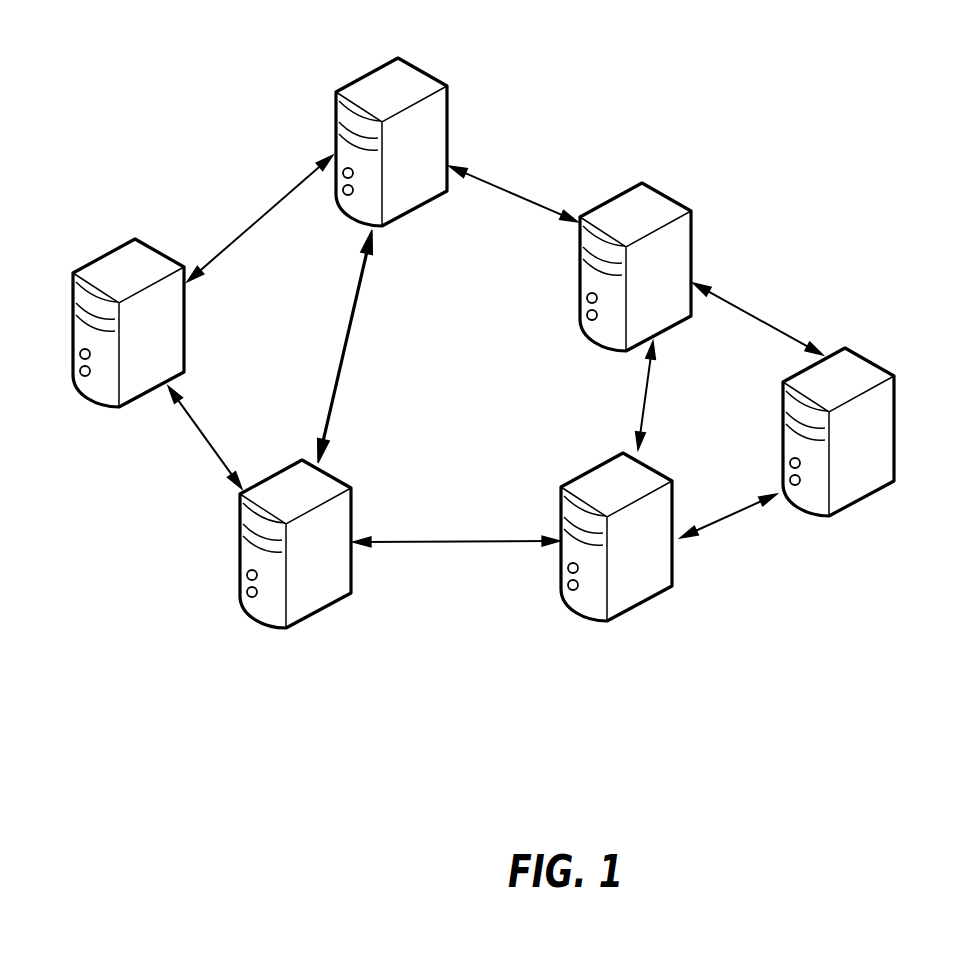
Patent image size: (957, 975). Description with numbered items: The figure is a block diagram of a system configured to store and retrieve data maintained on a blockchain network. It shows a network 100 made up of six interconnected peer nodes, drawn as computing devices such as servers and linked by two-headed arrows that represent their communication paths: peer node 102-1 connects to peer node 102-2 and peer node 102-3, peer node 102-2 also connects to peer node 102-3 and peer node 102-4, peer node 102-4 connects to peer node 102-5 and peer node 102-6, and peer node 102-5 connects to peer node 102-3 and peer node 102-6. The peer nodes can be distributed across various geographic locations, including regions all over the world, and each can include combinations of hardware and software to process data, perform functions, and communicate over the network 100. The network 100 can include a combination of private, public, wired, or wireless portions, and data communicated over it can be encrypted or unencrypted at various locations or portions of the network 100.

The network 100 is at (888, 75).
The peer node 102-1 is at (110, 250).
The peer node 102-2 is at (423, 210).
The peer node 102-3 is at (302, 622).
The peer node 102-4 is at (637, 180).
The peer node 102-5 is at (637, 615).
The peer node 102-6 is at (845, 345).